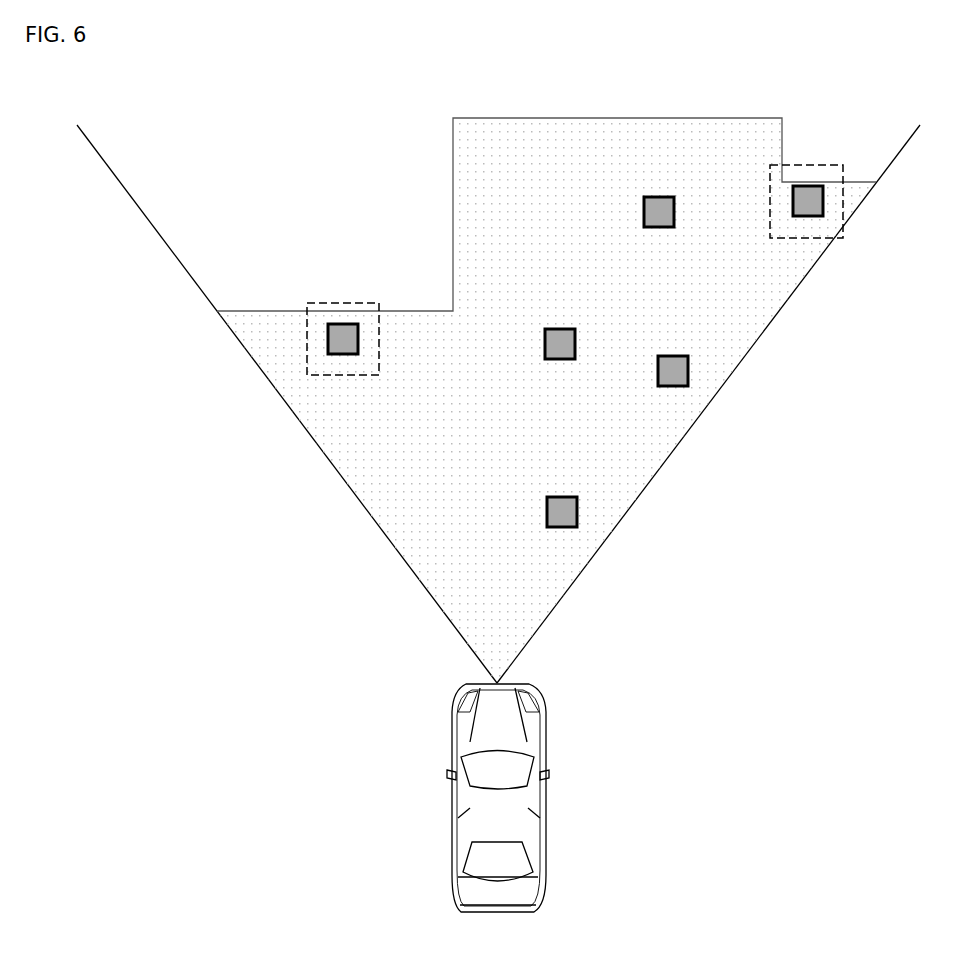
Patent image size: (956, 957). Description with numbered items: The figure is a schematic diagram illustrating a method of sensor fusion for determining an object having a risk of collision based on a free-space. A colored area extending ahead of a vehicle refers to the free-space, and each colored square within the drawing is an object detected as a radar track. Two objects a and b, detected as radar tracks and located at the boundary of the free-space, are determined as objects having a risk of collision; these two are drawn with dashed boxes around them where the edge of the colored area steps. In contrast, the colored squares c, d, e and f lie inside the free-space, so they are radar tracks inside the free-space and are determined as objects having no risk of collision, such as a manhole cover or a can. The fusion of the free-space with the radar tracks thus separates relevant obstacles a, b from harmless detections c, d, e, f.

The object detected as radar track at free-space boundary a is at (343, 328).
The object detected as radar track at free-space boundary b is at (808, 190).
The radar track inside free-space c is at (559, 332).
The radar track inside free-space d is at (658, 200).
The radar track inside free-space e is at (562, 500).
The radar track inside free-space f is at (673, 360).